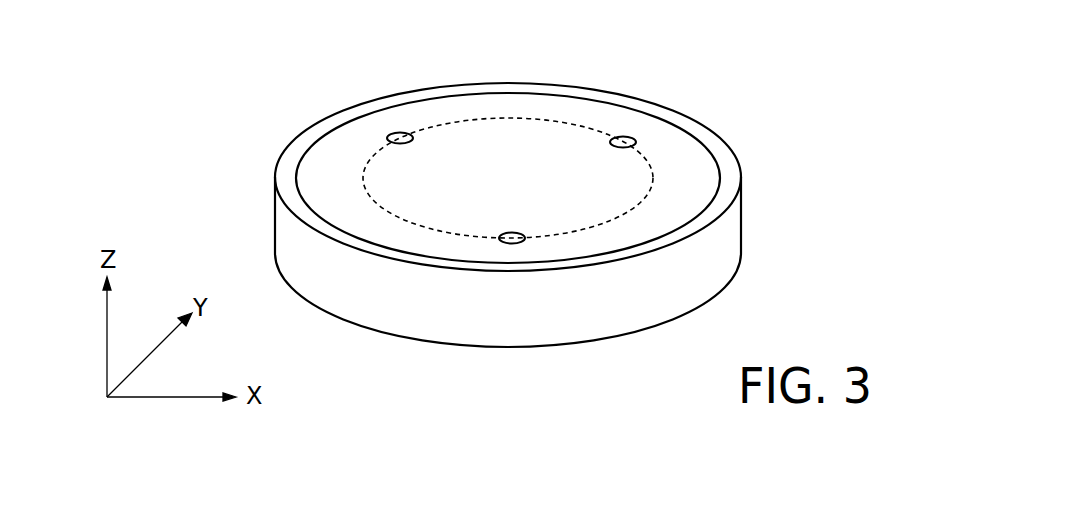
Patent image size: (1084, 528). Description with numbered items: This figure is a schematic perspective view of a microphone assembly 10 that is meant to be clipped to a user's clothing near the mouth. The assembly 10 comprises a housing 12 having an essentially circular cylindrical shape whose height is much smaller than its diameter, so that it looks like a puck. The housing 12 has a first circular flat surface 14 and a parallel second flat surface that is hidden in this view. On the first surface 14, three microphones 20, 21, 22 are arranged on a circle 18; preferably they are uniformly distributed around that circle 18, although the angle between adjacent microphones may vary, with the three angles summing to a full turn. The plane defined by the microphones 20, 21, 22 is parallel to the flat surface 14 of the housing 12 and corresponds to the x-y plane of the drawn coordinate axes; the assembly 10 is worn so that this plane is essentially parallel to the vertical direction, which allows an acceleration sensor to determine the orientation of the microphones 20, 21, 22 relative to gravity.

The microphone assembly 10 is at (762, 252).
The housing 12 is at (733, 178).
The first circular flat surface 14 is at (588, 116).
The circle 18 is at (373, 157).
The microphone 20 is at (400, 122).
The microphone 21 is at (644, 124).
The microphone 22 is at (524, 254).